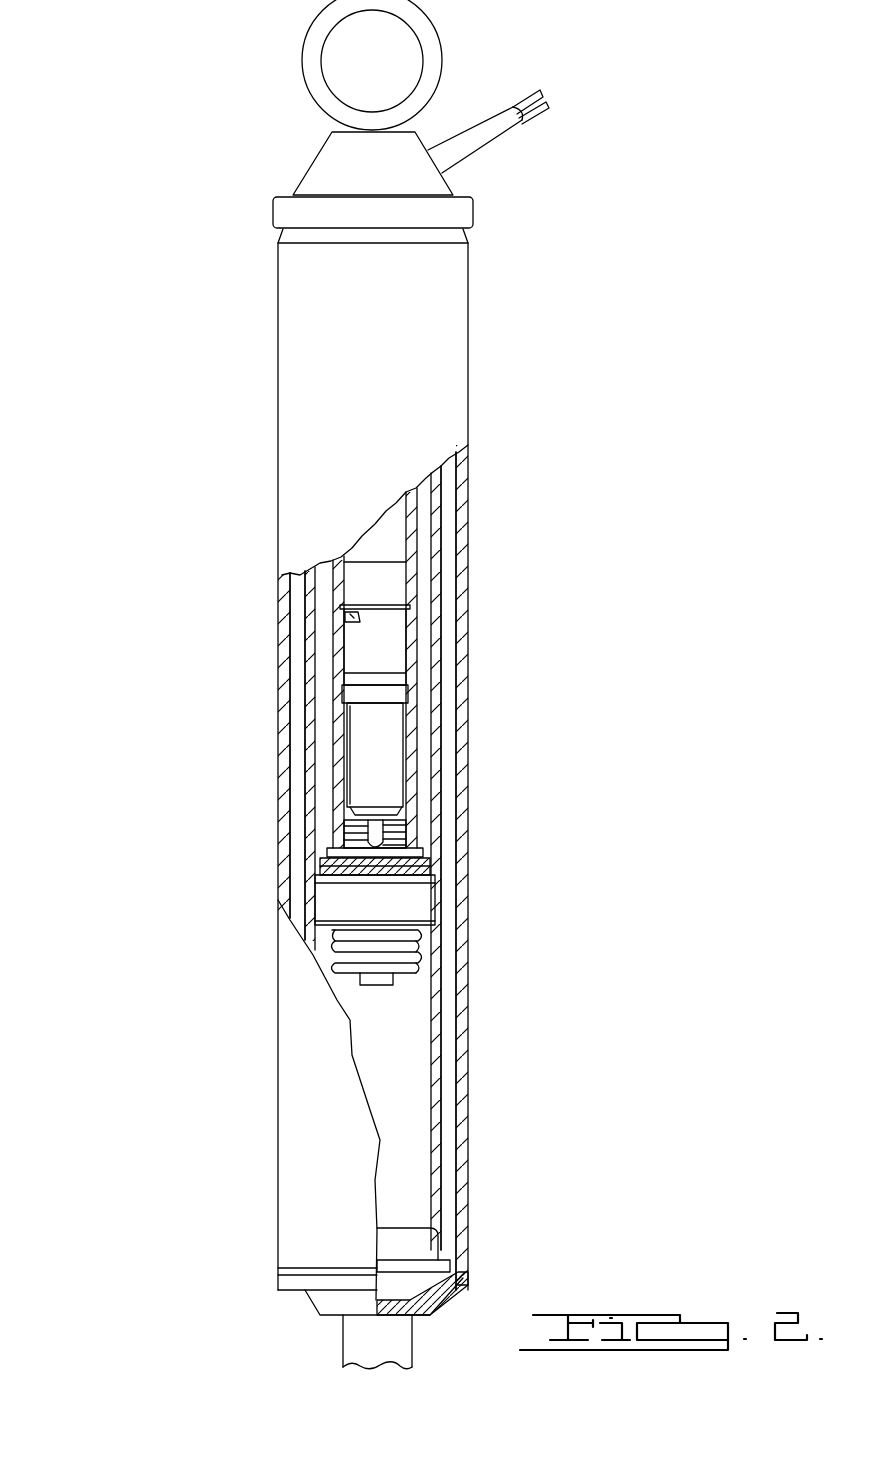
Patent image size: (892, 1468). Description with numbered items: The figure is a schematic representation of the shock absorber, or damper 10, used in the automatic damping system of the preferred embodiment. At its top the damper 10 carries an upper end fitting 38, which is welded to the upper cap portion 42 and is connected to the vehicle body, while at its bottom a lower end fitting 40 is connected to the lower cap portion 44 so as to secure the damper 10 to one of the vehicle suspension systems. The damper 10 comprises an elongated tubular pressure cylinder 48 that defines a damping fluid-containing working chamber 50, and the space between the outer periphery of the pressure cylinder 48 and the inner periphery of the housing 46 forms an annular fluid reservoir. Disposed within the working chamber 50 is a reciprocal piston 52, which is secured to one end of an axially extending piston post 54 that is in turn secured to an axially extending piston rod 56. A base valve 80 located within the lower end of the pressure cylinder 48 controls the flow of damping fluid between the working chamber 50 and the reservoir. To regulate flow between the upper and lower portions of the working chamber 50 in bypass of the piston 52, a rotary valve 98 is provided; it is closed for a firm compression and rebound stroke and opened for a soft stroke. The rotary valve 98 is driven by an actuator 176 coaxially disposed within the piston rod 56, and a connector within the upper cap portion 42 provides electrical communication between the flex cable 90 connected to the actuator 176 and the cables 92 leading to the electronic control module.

The damper 10 is at (113, 84).
The upper end fitting 38 is at (305, 57).
The upper cap portion 42 is at (280, 213).
The cables 92 is at (475, 145).
The housing 46 is at (285, 724).
The working chamber 50 is at (295, 670).
The pressure cylinder 48 is at (307, 612).
The flex cable 90 is at (385, 535).
The actuator 176 is at (393, 650).
The rotary valve 98 is at (387, 767).
The piston post 54 is at (350, 825).
The reciprocal piston 52 is at (327, 900).
The piston rod 56 is at (332, 955).
The base valve 80 is at (418, 1243).
The lower end fitting 40 is at (323, 1300).
The lower cap portion 44 is at (365, 1350).